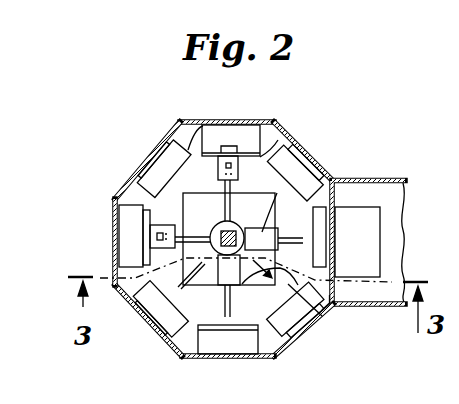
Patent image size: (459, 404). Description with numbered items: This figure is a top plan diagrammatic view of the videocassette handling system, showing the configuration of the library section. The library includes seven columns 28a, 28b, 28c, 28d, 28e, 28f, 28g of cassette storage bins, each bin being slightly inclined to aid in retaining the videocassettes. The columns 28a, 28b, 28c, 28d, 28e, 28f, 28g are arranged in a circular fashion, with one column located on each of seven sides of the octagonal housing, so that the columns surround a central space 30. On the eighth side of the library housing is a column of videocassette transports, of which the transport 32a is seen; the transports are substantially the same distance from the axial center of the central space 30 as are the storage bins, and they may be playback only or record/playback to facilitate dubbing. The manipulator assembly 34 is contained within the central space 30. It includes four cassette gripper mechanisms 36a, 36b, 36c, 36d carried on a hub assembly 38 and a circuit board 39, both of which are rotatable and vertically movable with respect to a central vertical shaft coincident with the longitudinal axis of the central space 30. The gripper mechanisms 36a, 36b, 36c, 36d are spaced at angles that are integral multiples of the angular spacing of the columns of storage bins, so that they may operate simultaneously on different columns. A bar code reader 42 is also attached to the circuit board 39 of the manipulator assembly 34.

The column of cassette storage bins 28a is at (280, 359).
The column of cassette storage bins 28b is at (172, 359).
The column of cassette storage bins 28c is at (172, 342).
The column of cassette storage bins 28d is at (119, 204).
The column of cassette storage bins 28e is at (197, 118).
The column of cassette storage bins 28f is at (280, 121).
The column of cassette storage bins 28g is at (335, 178).
The central space 30 is at (262, 314).
The videocassette transport 32a is at (380, 233).
The manipulator assembly 34 is at (326, 304).
The cassette gripper mechanism 36a is at (306, 148).
The cassette gripper mechanism 36b is at (300, 328).
The cassette gripper mechanism 36c is at (150, 226).
The cassette gripper mechanism 36d is at (166, 142).
The hub assembly 38 is at (218, 177).
The circuit board 39 is at (245, 193).
The bar code reader 42 is at (190, 287).